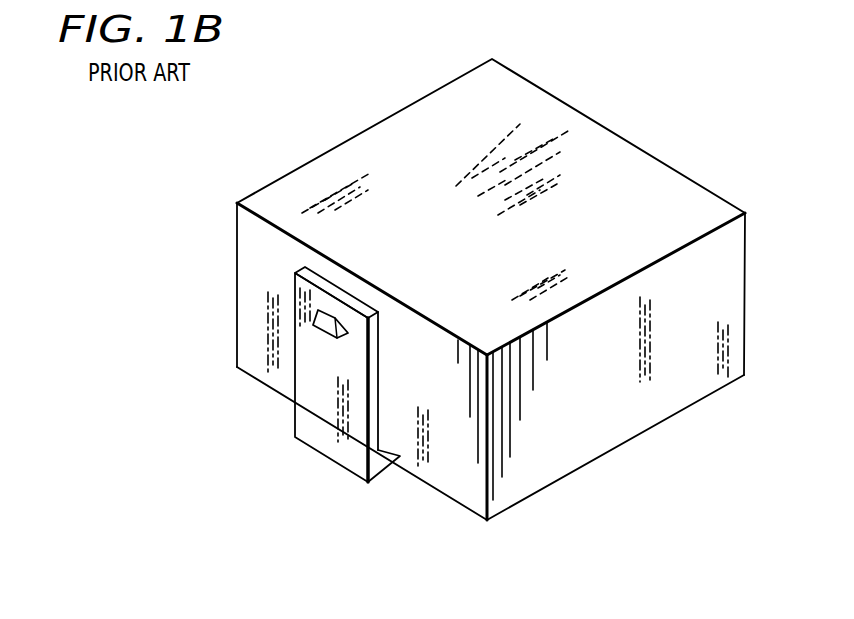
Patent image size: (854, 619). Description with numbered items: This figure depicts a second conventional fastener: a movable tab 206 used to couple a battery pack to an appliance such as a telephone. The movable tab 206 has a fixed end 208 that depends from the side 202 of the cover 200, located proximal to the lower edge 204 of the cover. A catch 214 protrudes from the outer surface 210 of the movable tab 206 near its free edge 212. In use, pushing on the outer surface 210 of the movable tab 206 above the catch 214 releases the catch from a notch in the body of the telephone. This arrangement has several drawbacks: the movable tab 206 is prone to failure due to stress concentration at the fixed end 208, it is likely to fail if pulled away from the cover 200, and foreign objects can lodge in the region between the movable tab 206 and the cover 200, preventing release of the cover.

The cover 200 is at (340, 118).
The side 202 is at (253, 305).
The lower edge 204 is at (250, 377).
The movable tab 206 is at (317, 393).
The fixed end 208 is at (387, 462).
The outer surface 210 is at (343, 372).
The free edge 212 is at (343, 310).
The catch 214 is at (313, 325).